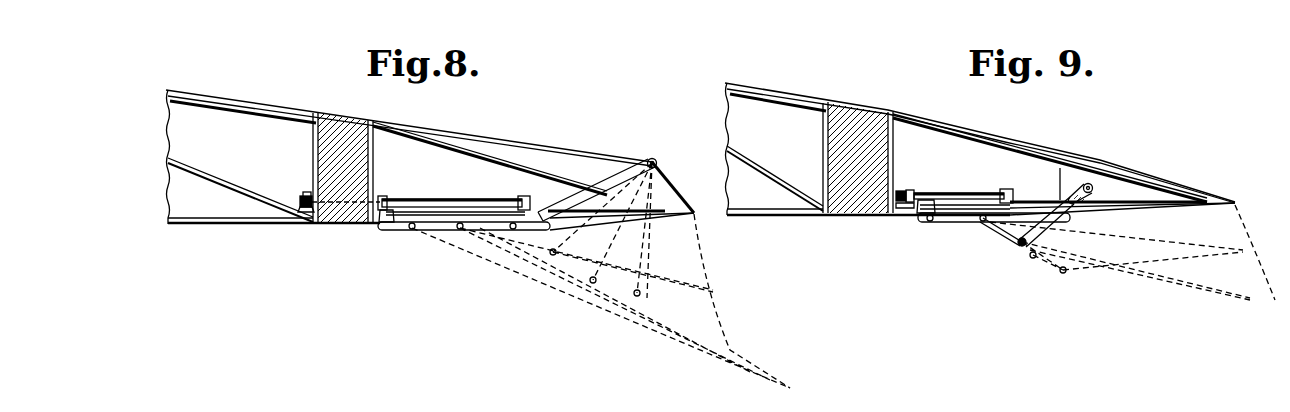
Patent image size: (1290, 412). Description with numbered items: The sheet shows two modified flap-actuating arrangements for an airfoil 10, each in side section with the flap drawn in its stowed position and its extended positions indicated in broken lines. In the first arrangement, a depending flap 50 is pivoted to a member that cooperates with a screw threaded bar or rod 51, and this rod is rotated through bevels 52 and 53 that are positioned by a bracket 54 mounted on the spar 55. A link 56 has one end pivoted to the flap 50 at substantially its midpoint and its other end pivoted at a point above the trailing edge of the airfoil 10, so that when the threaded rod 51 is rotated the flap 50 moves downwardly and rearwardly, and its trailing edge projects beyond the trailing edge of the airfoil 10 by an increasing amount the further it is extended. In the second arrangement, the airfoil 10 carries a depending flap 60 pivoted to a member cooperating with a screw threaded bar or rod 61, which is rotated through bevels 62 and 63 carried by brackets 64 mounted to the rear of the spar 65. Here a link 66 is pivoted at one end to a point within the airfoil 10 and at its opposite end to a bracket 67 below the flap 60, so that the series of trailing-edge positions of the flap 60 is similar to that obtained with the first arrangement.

In FIG. 8, the airfoil 10 is at (246, 98).
In FIG. 9, the airfoil 10 is at (883, 106).
In FIG. 8, the flap 50 is at (410, 229).
In FIG. 8, the screw threaded bar or rod 51 is at (420, 199).
In FIG. 8, the bevel 52 is at (302, 202).
In FIG. 8, the bevel 53 is at (308, 195).
In FIG. 8, the bracket 54 is at (305, 211).
In FIG. 8, the spar 55 is at (345, 213).
In FIG. 8, the link 56 is at (628, 173).
In FIG. 9, the flap 60 is at (924, 224).
In FIG. 9, the screw threaded bar or rod 61 is at (962, 195).
In FIG. 9, the bevel 62 is at (900, 193).
In FIG. 9, the bevel 63 is at (910, 198).
In FIG. 9, the bracket 64 is at (905, 209).
In FIG. 9, the spar 65 is at (853, 188).
In FIG. 9, the link 66 is at (1076, 194).
In FIG. 9, the bracket 67 is at (1020, 246).